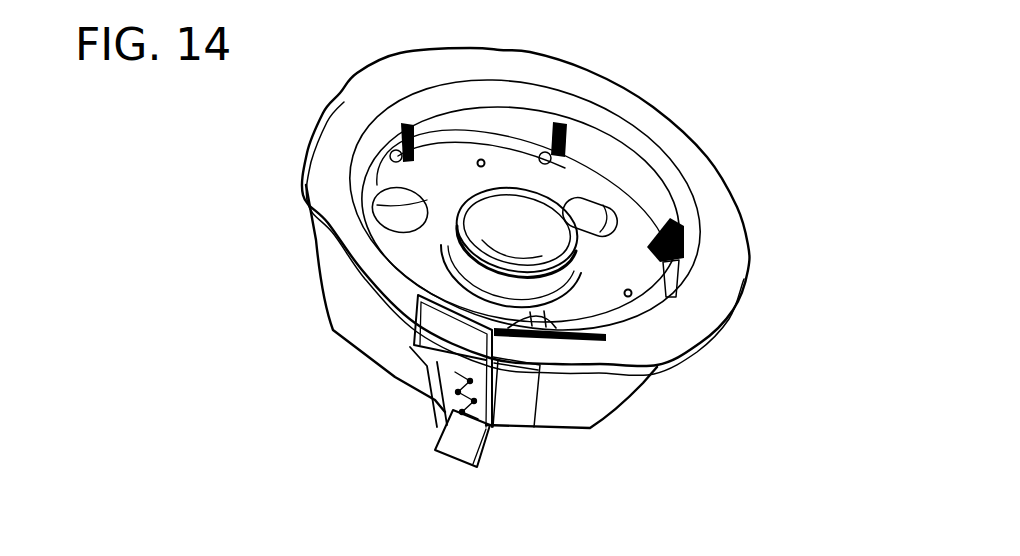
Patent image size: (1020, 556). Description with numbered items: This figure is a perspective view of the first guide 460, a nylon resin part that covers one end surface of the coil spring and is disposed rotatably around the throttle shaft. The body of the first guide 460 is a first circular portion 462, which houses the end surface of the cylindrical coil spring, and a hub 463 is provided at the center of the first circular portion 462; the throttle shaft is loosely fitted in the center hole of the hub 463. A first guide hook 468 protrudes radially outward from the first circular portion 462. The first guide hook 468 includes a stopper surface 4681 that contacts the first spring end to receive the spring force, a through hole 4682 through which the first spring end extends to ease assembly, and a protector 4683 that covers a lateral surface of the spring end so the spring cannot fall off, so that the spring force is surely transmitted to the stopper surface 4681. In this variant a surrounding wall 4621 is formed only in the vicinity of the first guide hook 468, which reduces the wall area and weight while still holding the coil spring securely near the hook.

The first guide 460 is at (564, 291).
The first circular portion 462 is at (725, 257).
The surrounding wall 4621 is at (590, 412).
The hub 463 is at (545, 198).
The first guide hook 468 is at (441, 418).
The stopper surface 4681 is at (500, 405).
The hole 4682 is at (435, 332).
The protector 4683 is at (421, 412).